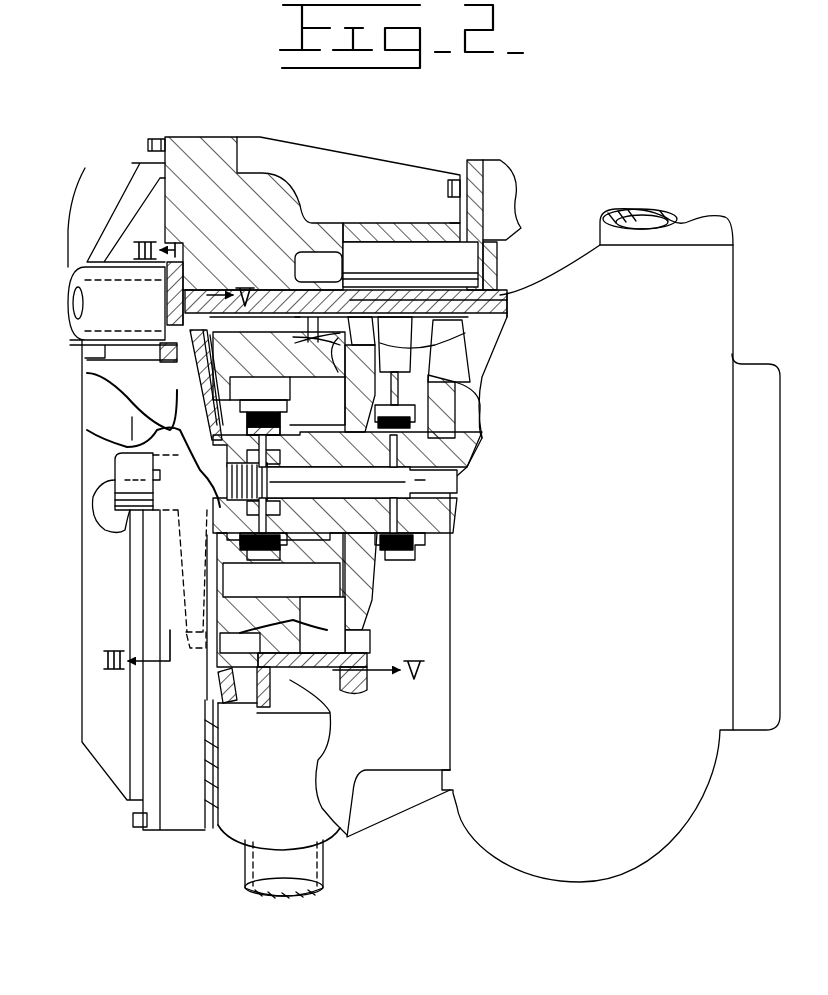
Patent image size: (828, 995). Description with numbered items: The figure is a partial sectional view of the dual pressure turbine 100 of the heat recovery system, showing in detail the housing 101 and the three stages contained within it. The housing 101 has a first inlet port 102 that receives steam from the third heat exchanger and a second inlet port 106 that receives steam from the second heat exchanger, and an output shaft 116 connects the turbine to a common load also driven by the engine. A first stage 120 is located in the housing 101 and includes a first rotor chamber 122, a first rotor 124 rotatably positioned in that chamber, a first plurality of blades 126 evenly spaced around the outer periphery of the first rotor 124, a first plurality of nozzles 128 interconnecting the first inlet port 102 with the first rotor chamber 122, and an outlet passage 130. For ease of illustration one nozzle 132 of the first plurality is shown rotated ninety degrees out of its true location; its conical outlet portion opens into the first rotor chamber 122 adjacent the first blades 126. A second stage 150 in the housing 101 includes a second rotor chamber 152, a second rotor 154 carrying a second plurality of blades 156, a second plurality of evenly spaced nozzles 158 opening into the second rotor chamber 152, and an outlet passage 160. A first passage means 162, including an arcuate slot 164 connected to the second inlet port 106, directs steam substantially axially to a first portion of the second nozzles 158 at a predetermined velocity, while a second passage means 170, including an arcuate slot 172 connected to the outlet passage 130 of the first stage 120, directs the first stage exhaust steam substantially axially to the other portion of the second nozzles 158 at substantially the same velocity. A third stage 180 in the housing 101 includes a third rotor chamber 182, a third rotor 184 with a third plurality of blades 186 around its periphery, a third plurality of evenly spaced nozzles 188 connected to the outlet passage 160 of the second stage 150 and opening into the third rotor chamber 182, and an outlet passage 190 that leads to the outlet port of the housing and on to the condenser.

The dual pressure turbine 100 is at (203, 855).
The housing 101 is at (197, 143).
The first inlet port 102 is at (68, 228).
The second inlet port 106 is at (273, 883).
The output shaft 116 is at (93, 532).
The first stage 120 is at (218, 228).
The first rotor chamber 122 is at (228, 388).
The first rotor 124 is at (180, 390).
The first plurality of blades 126 is at (195, 300).
The first plurality of nozzles 128 is at (158, 294).
The outlet passage 130 is at (263, 337).
The nozzle 132 is at (167, 306).
The second stage 150 is at (350, 270).
The second rotor chamber 152 is at (327, 426).
The second rotor 154 is at (347, 486).
The second plurality of blades 156 is at (400, 277).
The second plurality of nozzles 158 is at (330, 382).
The outlet passage 160 is at (487, 327).
The first passage means 162 is at (245, 720).
The arcuate slot 164 is at (290, 630).
The second passage means 170 is at (248, 380).
The arcuate slot 172 is at (318, 267).
The third stage 180 is at (424, 388).
The third rotor chamber 182 is at (468, 400).
The third rotor 184 is at (354, 484).
The third plurality of blades 186 is at (473, 383).
The third plurality of nozzles 188 is at (457, 360).
The outlet passage 190 is at (503, 327).